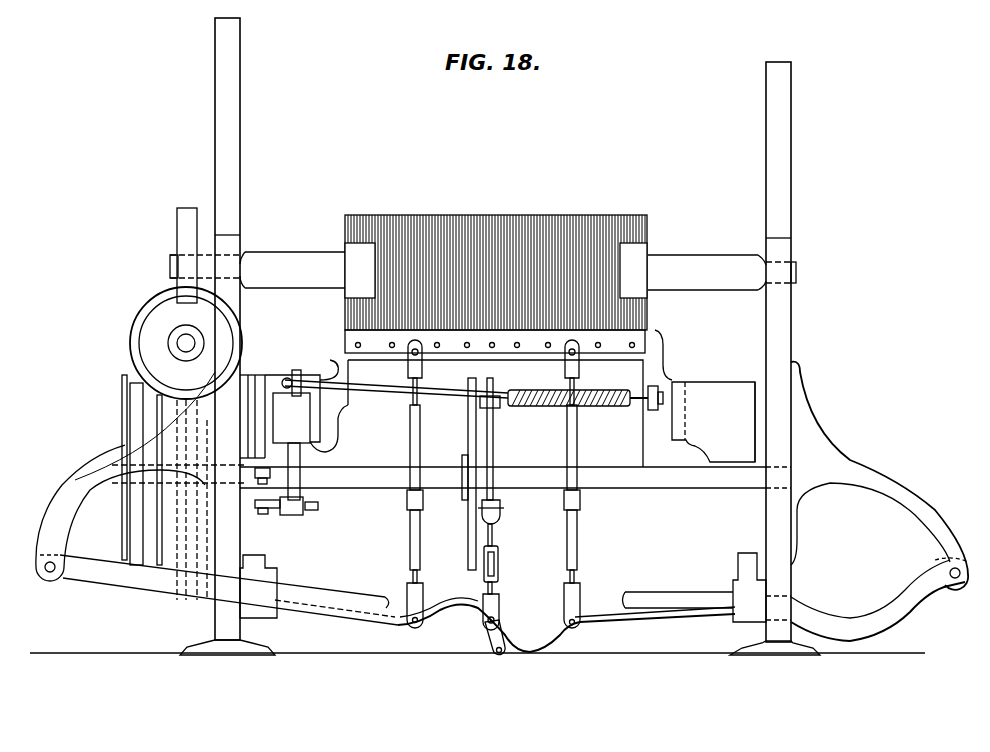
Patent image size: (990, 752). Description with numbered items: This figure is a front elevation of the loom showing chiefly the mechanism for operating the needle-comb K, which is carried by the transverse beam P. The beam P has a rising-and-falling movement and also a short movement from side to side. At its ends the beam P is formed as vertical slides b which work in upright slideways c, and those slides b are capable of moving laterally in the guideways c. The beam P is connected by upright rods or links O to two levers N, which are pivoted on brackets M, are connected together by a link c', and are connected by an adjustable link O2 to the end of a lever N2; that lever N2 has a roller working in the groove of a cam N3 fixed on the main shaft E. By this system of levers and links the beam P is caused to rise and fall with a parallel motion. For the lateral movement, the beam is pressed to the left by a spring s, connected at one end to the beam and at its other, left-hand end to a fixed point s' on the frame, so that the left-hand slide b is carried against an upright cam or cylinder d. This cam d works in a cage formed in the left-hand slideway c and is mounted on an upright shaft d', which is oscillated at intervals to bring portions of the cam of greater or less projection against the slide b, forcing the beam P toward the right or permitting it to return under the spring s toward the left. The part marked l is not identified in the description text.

The needle-comb K is at (496, 259).
The transverse beam P is at (495, 342).
The vertical slides b is at (332, 366).
The upright slideways c is at (510, 418).
The link c' is at (471, 668).
The upright cam d is at (291, 446).
The upright shaft d' is at (293, 478).
The adjusting nut l is at (294, 514).
The spring s is at (585, 408).
The fixed point s' is at (383, 376).
The levers N is at (348, 622).
The lever N2 is at (493, 442).
The cam N3 is at (468, 442).
The upright rods or links O is at (501, 484).
The adjustable link O2 is at (498, 563).
The main shaft E is at (652, 490).
The brackets M is at (502, 476).